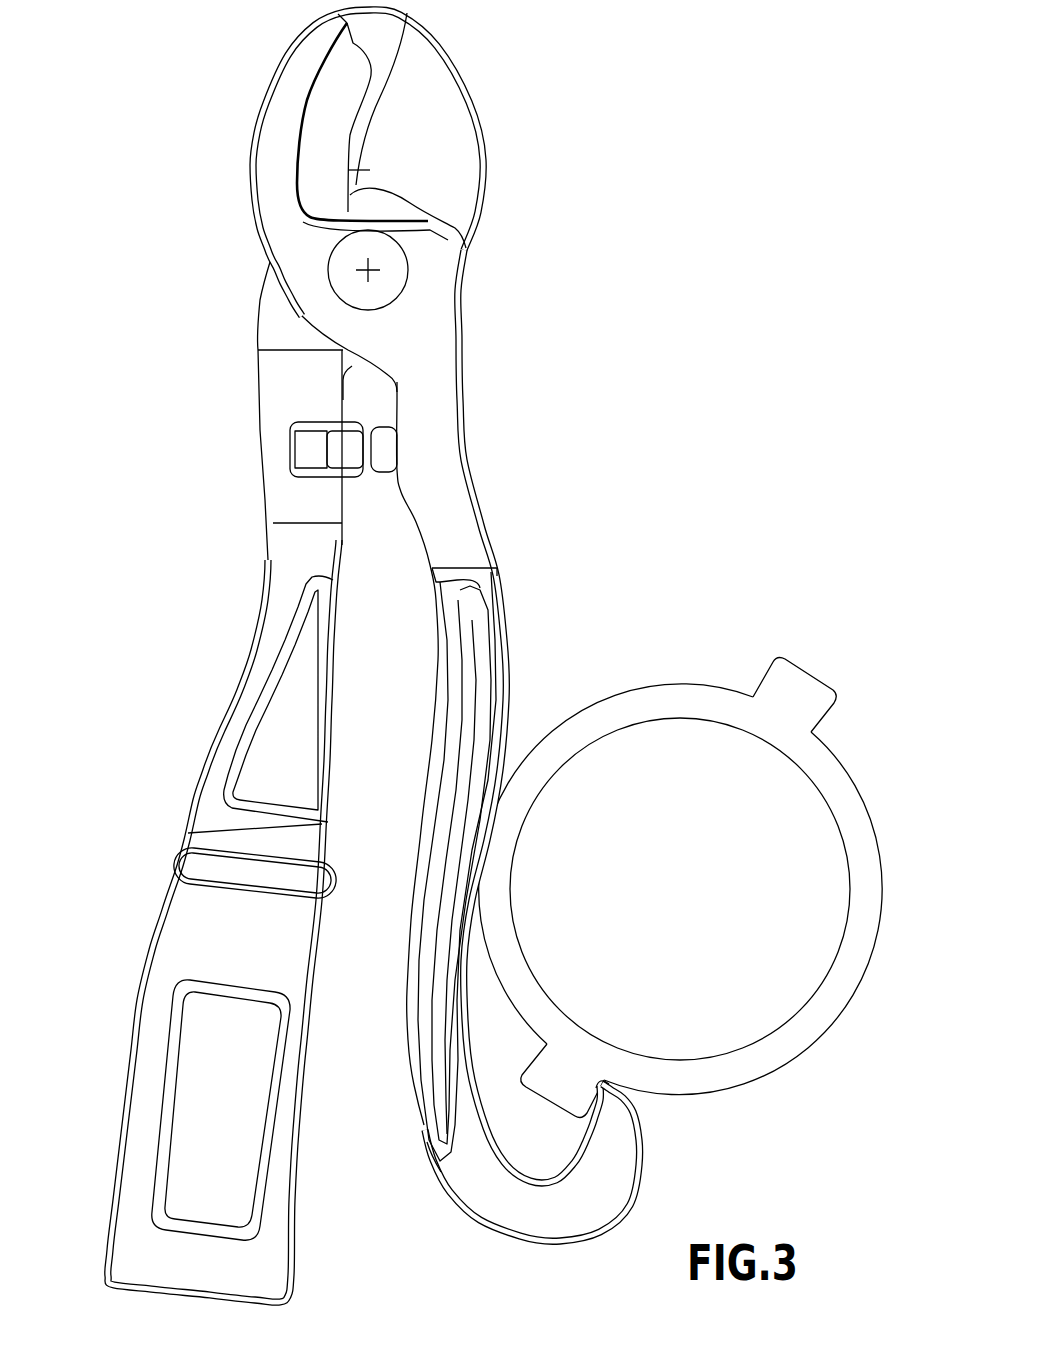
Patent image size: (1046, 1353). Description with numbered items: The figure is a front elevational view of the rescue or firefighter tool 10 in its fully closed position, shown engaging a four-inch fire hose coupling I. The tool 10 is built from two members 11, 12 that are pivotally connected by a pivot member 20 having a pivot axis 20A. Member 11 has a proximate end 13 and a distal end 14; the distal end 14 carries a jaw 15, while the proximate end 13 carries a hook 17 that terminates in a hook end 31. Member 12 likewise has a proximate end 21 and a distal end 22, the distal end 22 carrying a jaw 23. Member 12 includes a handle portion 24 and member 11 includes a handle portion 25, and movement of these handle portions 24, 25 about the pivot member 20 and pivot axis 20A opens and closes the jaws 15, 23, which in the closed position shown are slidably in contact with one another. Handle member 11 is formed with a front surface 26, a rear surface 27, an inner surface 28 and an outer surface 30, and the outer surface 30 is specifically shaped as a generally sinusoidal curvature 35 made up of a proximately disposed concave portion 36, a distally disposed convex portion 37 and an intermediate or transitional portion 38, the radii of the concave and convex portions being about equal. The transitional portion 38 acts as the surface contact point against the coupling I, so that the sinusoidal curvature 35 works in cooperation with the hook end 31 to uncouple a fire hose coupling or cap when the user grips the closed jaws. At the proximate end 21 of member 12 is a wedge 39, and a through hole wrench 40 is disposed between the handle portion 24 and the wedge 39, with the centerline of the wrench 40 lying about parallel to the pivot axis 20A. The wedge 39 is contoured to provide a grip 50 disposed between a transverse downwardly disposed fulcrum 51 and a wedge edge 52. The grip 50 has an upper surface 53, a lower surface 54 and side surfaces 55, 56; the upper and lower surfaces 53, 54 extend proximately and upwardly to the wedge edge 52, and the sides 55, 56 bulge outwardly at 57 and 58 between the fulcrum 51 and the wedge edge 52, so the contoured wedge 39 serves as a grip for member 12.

The rescue or firefighter tool 10 is at (505, 305).
The member 11 is at (497, 557).
The member 12 is at (263, 600).
The proximate end 13 is at (430, 1163).
The distal end 14 is at (248, 200).
The jaw 15 is at (272, 138).
The hook 17 is at (594, 1236).
The pivot member 20 is at (407, 257).
The pivot axis 20A is at (360, 275).
The proximate end 21 is at (120, 1152).
The distal end 22 is at (437, 36).
The jaw 23 is at (447, 97).
The handle portion 24 is at (243, 727).
The handle portion 25 is at (510, 635).
The front surface 26 is at (483, 610).
The rear surface 27 is at (503, 582).
The inner surface 28 is at (437, 630).
The outer surface 30 is at (510, 706).
The hook end 31 is at (600, 1080).
The sinusoidal curvature 35 is at (468, 898).
The concave portion 36 is at (468, 995).
The convex portion 37 is at (461, 700).
The transitional portion 38 is at (480, 840).
The wedge 39 is at (247, 1267).
The through hole wrench 40 is at (203, 1103).
The grip 50 is at (188, 813).
The fulcrum 51 is at (307, 880).
The wedge edge 52 is at (135, 1289).
The upper surface 53 is at (182, 930).
The lower surface 54 is at (323, 1030).
The side surface 55 is at (123, 1102).
The side surface 56 is at (303, 1130).
The outward bulge 57 is at (170, 877).
The outward bulge 58 is at (323, 900).
The fire hose coupling I is at (850, 778).